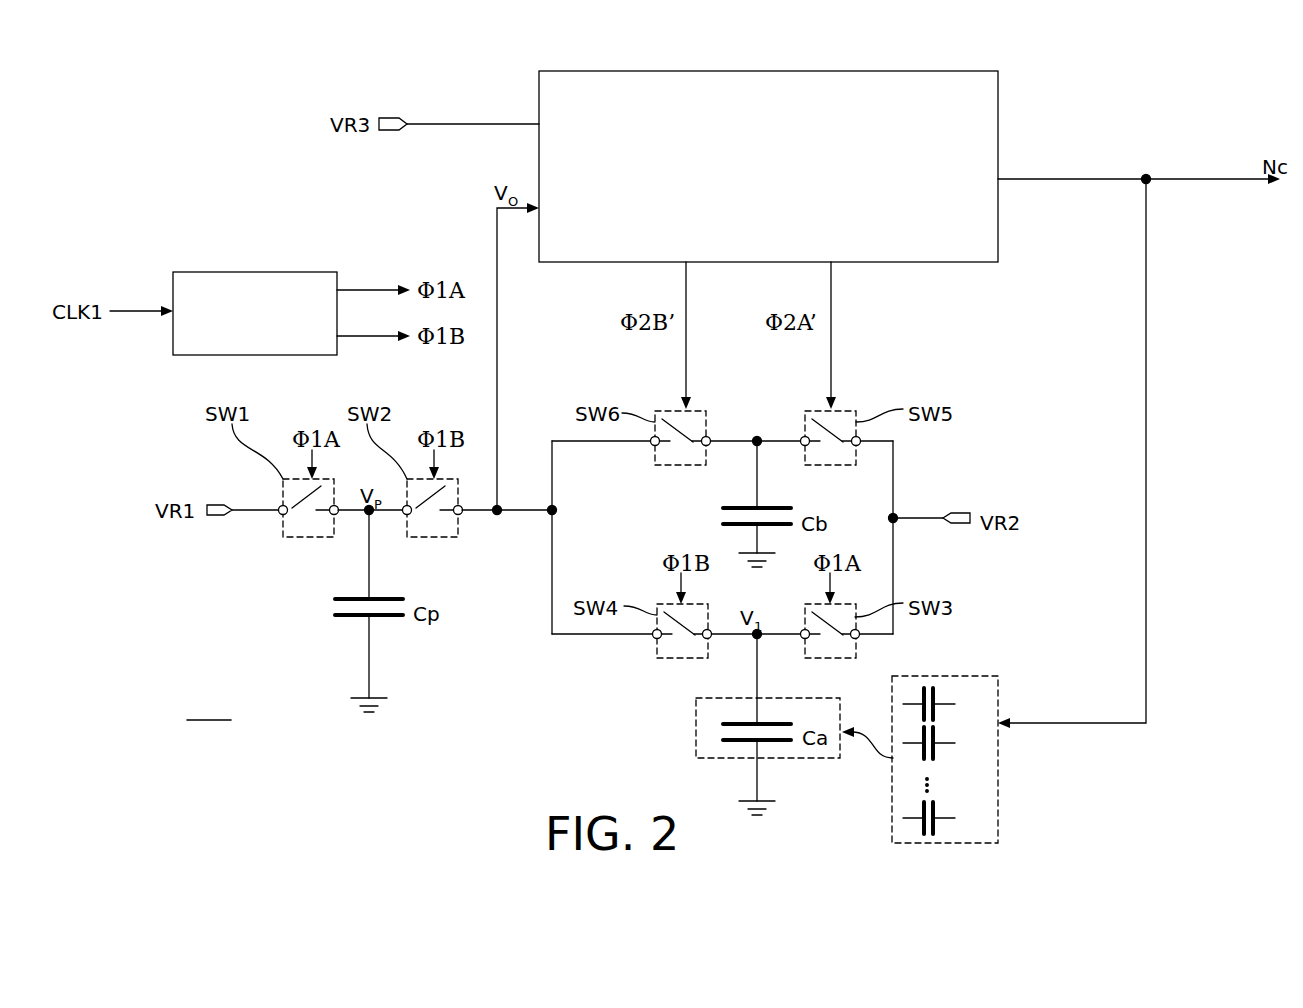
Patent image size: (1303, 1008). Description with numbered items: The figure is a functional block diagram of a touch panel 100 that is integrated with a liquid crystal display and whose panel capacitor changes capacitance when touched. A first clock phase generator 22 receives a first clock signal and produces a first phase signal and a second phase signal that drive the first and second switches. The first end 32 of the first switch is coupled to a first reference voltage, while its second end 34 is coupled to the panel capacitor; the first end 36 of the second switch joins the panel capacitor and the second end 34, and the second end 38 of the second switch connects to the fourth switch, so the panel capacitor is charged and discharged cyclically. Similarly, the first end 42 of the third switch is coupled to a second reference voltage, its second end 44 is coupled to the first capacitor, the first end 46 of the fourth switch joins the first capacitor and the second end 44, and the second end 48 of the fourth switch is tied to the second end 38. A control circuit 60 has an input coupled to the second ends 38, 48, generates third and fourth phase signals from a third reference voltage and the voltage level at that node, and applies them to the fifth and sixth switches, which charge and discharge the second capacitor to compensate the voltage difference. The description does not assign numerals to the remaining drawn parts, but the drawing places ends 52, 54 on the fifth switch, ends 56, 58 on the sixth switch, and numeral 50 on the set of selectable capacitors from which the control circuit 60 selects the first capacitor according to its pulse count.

The first clock phase generator 22 is at (257, 272).
The first end of first switch 32 is at (280, 514).
The second end of first switch 34 is at (337, 514).
The first end of second switch 36 is at (404, 514).
The second end of second switch 38 is at (461, 514).
The first end of third switch 42 is at (858, 638).
The second end of third switch 44 is at (802, 638).
The first end of fourth switch 46 is at (710, 638).
The second end of fourth switch 48 is at (654, 638).
The capacitor bank 50 is at (962, 676).
The second terminal of switch SW5 52 is at (859, 445).
The first terminal of switch SW5 54 is at (802, 445).
The second terminal of switch SW6 56 is at (709, 445).
The first terminal of switch SW6 58 is at (652, 445).
The control circuit 60 is at (998, 118).
The touch panel 100 is at (210, 707).